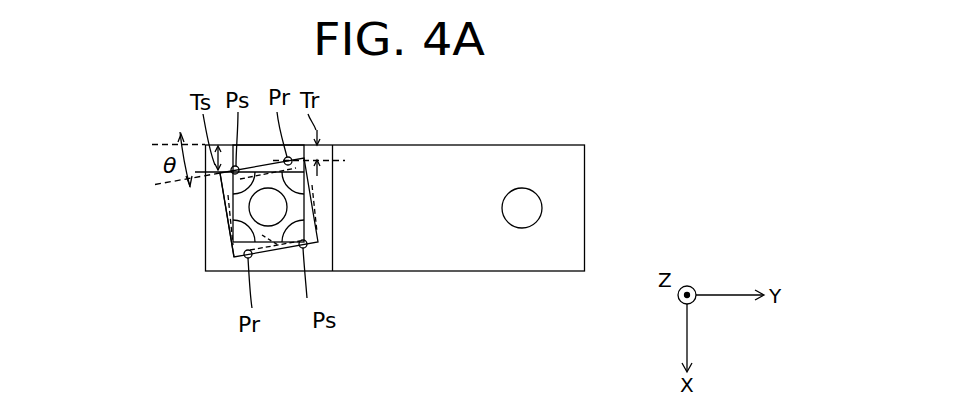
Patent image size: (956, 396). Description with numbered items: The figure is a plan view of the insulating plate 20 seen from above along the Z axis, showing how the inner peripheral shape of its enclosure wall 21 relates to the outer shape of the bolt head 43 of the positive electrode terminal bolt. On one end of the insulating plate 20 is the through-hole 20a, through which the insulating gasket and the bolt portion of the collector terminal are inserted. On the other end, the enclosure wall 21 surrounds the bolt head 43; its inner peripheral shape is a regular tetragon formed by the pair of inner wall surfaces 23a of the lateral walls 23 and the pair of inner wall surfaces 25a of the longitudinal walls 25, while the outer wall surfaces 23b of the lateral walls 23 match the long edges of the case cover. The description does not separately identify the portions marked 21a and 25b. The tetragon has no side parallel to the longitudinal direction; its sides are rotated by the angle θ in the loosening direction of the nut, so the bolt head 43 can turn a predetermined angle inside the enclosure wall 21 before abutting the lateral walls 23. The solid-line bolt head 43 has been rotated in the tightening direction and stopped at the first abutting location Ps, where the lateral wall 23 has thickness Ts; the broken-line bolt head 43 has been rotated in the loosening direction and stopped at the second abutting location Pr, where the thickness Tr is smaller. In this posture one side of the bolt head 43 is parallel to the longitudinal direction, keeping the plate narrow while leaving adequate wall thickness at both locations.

The insulating plate 20 is at (585, 188).
The through-hole 20a is at (527, 222).
The enclosure wall 21 is at (166, 128).
The support portion 21a is at (314, 216).
The lateral walls 23 is at (304, 158).
The inner wall surfaces of the lateral walls 23a is at (222, 188).
The outer wall surfaces of the lateral walls 23b is at (334, 208).
The longitudinal walls 25 is at (226, 232).
The inner wall surfaces of the longitudinal walls 25a is at (230, 247).
The frame portion 25b is at (287, 233).
The bolt head 43 is at (276, 245).